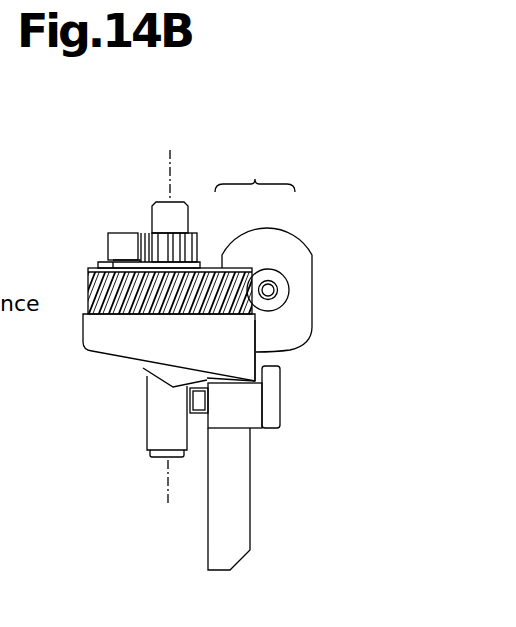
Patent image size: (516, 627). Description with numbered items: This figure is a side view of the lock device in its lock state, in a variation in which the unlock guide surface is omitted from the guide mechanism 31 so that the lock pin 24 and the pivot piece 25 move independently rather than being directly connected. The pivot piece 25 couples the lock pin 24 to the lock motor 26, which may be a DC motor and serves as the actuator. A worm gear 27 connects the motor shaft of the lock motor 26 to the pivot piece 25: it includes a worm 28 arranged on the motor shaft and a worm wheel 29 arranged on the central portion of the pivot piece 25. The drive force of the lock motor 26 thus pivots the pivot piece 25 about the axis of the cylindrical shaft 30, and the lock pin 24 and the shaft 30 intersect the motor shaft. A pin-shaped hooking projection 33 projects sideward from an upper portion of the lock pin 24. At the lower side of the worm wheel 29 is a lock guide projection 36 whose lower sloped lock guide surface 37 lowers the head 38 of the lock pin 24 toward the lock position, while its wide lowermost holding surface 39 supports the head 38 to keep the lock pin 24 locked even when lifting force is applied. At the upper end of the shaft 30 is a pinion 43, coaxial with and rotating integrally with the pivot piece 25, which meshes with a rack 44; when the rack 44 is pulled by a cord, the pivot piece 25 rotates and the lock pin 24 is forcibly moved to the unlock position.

The lock pin 24 is at (250, 525).
The pivot piece 25 is at (82, 330).
The lock motor 26 is at (310, 238).
The worm gear 27 is at (255, 170).
The worm 28 is at (262, 268).
The worm wheel 29 is at (210, 268).
The shaft 30 is at (152, 213).
The guide mechanism 31 is at (67, 409).
The hooking projection 33 is at (188, 401).
The lock guide projection 36 is at (248, 358).
The lock guide surface 37 is at (170, 387).
The head 38 is at (255, 408).
The holding surface 39 is at (232, 380).
The pinion 43 is at (203, 245).
The rack 44 is at (108, 243).